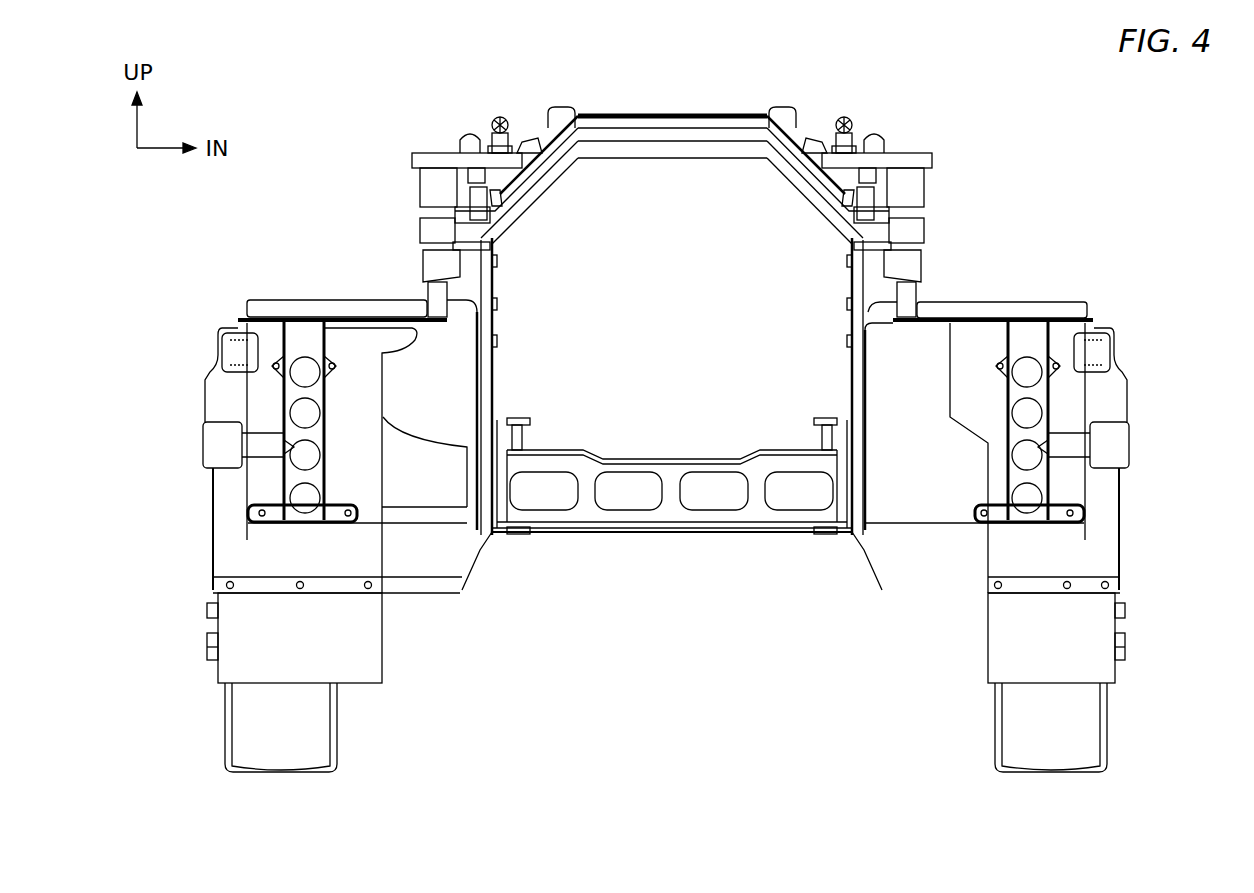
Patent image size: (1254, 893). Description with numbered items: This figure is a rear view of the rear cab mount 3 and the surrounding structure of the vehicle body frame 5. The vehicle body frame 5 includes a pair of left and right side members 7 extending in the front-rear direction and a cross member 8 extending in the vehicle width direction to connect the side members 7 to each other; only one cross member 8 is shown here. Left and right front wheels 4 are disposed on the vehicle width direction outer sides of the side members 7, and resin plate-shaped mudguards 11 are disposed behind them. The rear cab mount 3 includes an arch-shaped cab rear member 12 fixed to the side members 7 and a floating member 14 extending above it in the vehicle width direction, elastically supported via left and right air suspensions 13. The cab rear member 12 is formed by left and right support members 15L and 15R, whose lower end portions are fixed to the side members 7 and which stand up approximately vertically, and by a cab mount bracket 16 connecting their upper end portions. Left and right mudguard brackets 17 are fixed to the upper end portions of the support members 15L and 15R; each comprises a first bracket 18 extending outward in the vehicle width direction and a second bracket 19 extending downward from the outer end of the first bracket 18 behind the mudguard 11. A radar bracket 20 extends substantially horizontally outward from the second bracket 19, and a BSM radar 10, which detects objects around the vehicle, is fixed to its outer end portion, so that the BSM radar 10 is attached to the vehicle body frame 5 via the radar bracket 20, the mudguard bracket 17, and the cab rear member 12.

The rear cab mount 3 is at (698, 111).
The front wheel 4 is at (225, 722).
The vehicle body frame 5 is at (752, 538).
The side member 7 is at (514, 538).
The cross member 8 is at (655, 536).
The BSM radar 10 is at (203, 448).
The mudguard 11 is at (212, 505).
The cab rear member 12 is at (631, 160).
The air suspension 13 is at (420, 190).
The floating member 14 is at (905, 150).
The left support member 15L is at (497, 285).
The right support member 15R is at (847, 285).
The cab mount bracket 16 is at (690, 160).
The mudguard bracket 17 is at (272, 300).
The first bracket 18 is at (295, 300).
The second bracket 19 is at (280, 400).
The radar bracket 20 is at (268, 462).